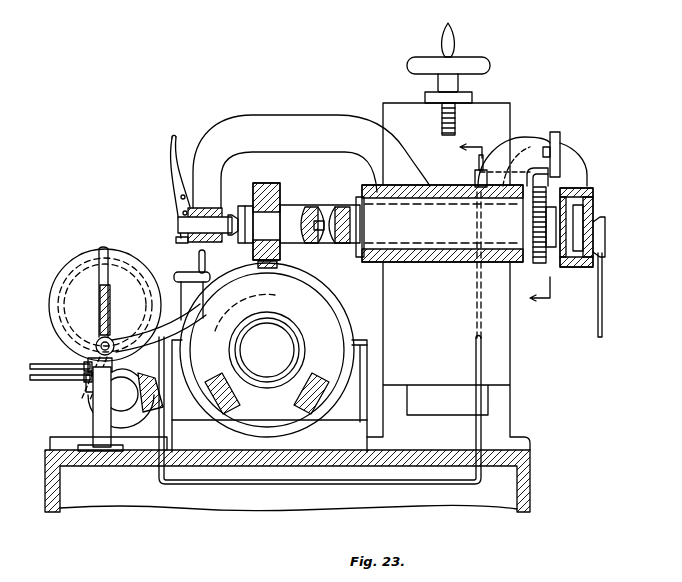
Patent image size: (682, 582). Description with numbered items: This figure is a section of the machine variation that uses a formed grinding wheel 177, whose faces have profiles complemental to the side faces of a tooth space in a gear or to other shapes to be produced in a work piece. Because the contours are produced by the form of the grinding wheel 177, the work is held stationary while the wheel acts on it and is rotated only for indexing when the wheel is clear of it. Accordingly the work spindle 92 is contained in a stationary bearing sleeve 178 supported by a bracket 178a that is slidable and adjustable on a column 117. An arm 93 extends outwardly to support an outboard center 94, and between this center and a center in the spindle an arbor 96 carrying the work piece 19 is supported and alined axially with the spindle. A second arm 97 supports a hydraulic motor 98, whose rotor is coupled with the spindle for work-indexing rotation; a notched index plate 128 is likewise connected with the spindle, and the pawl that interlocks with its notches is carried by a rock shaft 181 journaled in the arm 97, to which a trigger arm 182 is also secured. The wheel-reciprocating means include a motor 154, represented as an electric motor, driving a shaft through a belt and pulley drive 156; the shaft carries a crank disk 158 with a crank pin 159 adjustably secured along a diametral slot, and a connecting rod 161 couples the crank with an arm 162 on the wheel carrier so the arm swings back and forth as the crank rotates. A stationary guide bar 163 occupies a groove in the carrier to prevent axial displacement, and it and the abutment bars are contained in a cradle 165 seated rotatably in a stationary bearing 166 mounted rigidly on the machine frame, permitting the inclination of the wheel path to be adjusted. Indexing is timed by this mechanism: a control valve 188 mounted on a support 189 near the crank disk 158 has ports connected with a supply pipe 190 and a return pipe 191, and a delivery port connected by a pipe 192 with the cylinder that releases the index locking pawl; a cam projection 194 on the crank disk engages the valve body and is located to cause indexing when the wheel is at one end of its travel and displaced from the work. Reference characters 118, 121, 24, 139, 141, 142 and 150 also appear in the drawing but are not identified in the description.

The base plate 118 is at (46, 487).
The pipe 192 is at (176, 486).
The bracket 178a is at (500, 355).
The column 117 is at (495, 112).
The hand screw 121 is at (441, 126).
The bearing sleeve 178 is at (452, 235).
The arm 93 is at (330, 124).
The outboard center 94 is at (200, 220).
The work piece 19 is at (270, 186).
The arbor 96 is at (298, 212).
The work spindle 92 is at (357, 251).
The rock shaft 181 is at (523, 141).
The trigger arm 182 is at (476, 179).
The section indicator 24 is at (507, 236).
The second arm 97 is at (549, 132).
The notched index plate 128 is at (542, 266).
The hydraulic motor 98 is at (592, 216).
The formed grinding wheel 177 is at (333, 297).
The arm 162 is at (277, 310).
The strap 141 is at (219, 378).
The strap 142 is at (314, 379).
The cradle 165 is at (352, 337).
The stationary bearing 166 is at (366, 380).
The pedestal 139 is at (258, 422).
The crank disk 158 is at (50, 308).
The connecting rod 161 is at (110, 323).
The crank pin 159 is at (99, 338).
The cam projection 194 is at (153, 290).
The oil cup 150 is at (196, 268).
The belt and pulley drive 156 is at (78, 363).
The return pipe 191 is at (30, 365).
The supply pipe 190 is at (30, 379).
The motor 154 is at (86, 386).
The control valve 188 is at (90, 405).
The support 189 is at (101, 440).
The stationary guide bar 163 is at (145, 375).